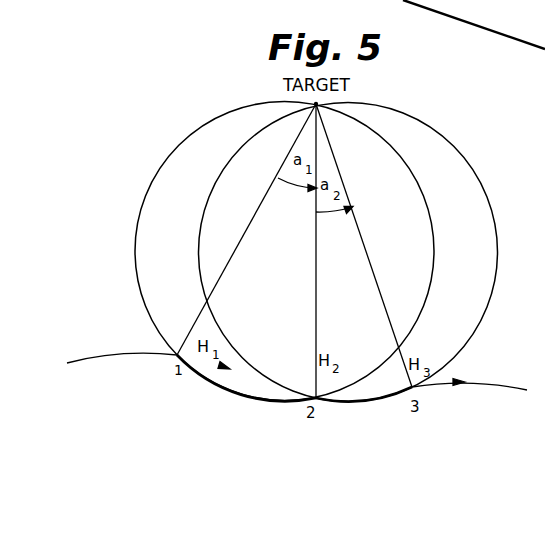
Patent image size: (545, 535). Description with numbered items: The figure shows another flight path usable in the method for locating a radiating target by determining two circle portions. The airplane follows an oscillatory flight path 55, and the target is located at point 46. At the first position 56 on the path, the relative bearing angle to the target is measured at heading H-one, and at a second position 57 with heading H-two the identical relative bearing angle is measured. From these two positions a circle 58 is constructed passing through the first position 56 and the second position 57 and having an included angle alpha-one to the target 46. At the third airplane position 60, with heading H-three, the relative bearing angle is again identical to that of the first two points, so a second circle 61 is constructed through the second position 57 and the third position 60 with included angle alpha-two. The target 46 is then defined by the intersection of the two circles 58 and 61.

The target 46 is at (320, 105).
The flight path 55 is at (123, 352).
The first position 56 is at (183, 359).
The second position 57 is at (332, 399).
The circle 58 is at (173, 152).
The third airplane position 60 is at (416, 389).
The second circle 61 is at (478, 172).